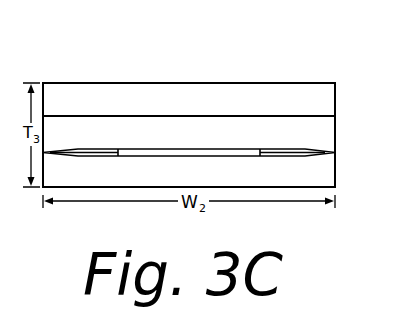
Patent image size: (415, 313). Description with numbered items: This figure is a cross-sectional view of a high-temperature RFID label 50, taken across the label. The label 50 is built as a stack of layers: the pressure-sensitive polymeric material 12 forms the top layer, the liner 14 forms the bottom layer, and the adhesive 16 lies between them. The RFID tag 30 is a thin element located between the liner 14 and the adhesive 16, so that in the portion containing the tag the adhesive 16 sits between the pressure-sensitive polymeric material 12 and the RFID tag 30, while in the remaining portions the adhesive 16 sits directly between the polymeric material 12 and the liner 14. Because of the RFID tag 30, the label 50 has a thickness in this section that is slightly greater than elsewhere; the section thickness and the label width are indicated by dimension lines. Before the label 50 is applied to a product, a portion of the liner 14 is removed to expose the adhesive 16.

The high-temperature RFID label 50 is at (313, 47).
The pressure-sensitive polymeric material 12 is at (180, 109).
The adhesive 16 is at (180, 140).
The liner 14 is at (180, 180).
The RFID tag 30 is at (135, 152).